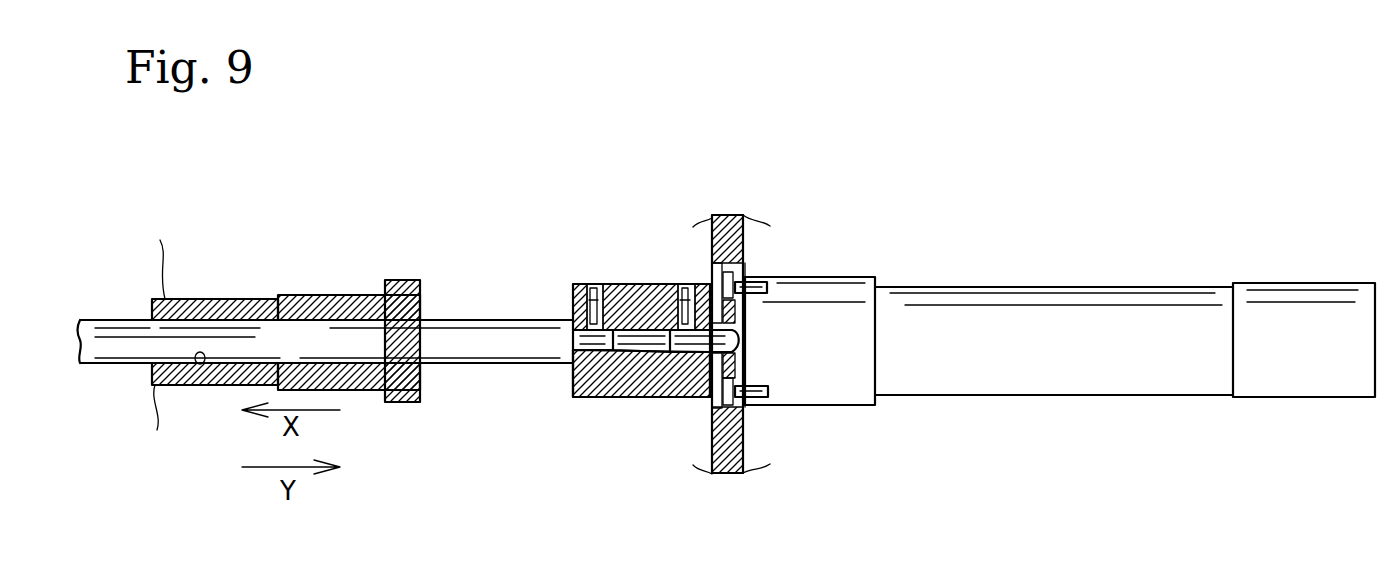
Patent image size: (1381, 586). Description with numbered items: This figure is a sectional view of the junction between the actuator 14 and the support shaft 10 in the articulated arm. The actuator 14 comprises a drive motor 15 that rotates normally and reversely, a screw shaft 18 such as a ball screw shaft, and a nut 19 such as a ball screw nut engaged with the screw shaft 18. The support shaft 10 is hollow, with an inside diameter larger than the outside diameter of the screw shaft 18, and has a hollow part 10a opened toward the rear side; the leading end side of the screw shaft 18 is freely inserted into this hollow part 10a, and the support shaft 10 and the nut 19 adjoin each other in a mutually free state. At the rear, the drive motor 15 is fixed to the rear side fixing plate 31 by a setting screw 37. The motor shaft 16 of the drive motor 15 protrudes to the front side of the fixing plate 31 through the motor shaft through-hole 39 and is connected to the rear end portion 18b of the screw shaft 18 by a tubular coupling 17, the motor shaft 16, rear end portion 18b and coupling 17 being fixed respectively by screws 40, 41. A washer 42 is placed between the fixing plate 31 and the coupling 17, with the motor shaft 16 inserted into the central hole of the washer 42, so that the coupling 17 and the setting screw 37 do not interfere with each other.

The support shaft 10 is at (210, 298).
The hollow part 10a is at (200, 364).
The actuator 14 is at (823, 266).
The drive motor 15 is at (850, 290).
The motor shaft 16 is at (687, 347).
The tubular coupling 17 is at (623, 285).
The screw shaft 18 is at (483, 352).
The rear end portion 18b is at (592, 340).
The nut 19 is at (322, 295).
The rear side fixing plate 31 is at (747, 253).
The setting screw 37 is at (772, 285).
The motor shaft through-hole 39 is at (740, 345).
The screw 40 is at (662, 298).
The screw 41 is at (568, 298).
The washer 42 is at (707, 283).